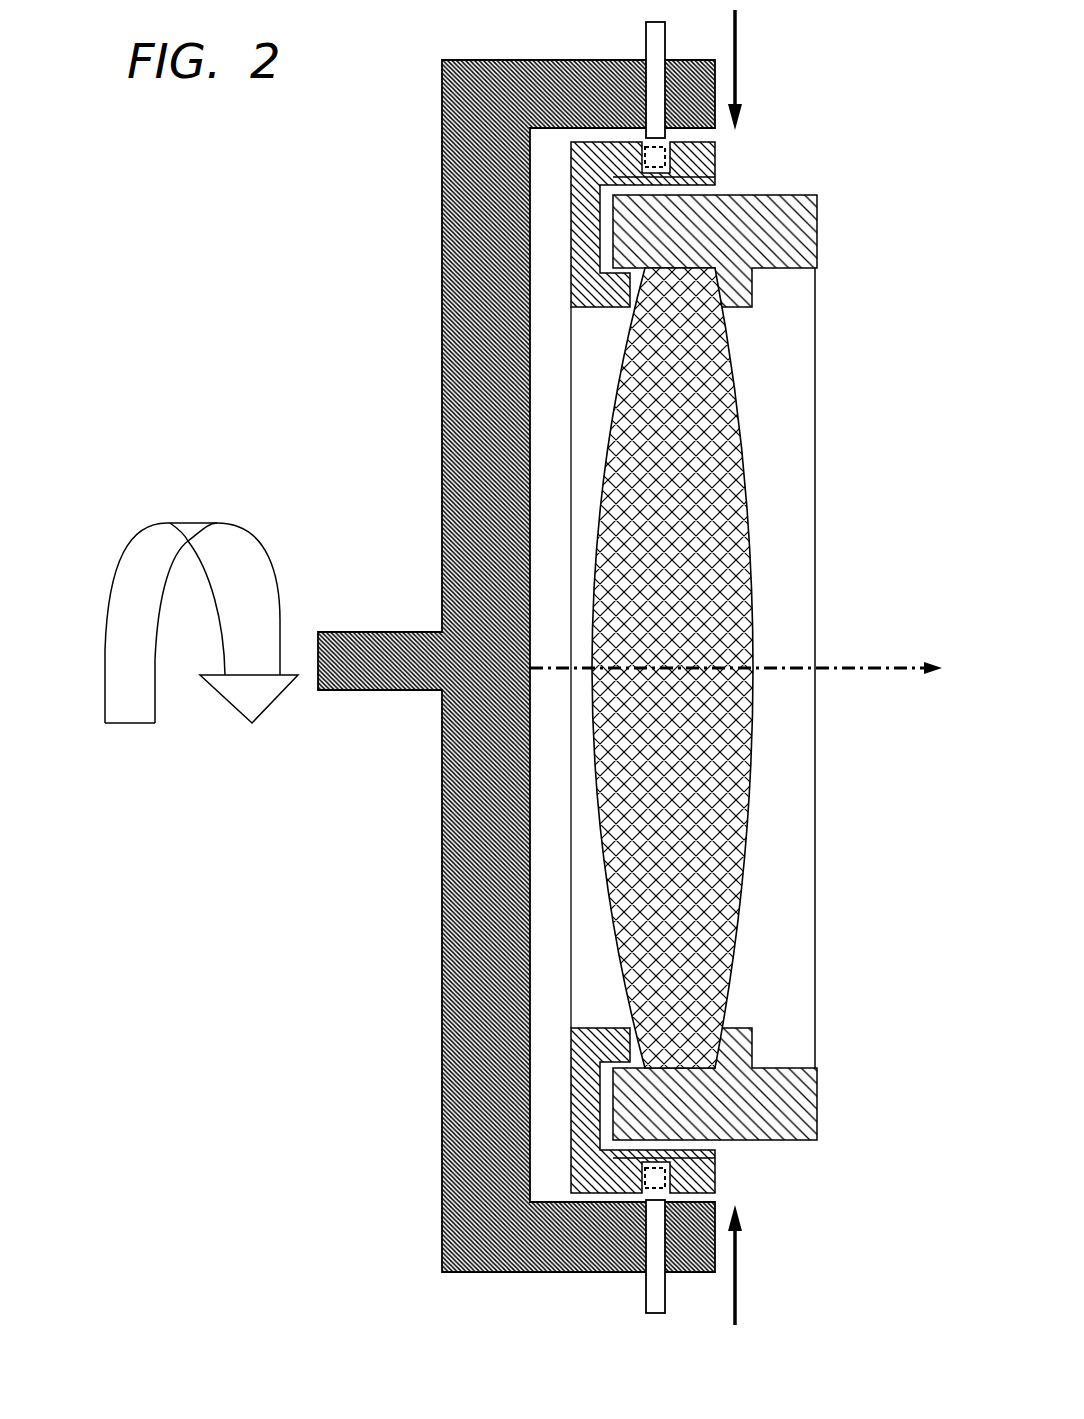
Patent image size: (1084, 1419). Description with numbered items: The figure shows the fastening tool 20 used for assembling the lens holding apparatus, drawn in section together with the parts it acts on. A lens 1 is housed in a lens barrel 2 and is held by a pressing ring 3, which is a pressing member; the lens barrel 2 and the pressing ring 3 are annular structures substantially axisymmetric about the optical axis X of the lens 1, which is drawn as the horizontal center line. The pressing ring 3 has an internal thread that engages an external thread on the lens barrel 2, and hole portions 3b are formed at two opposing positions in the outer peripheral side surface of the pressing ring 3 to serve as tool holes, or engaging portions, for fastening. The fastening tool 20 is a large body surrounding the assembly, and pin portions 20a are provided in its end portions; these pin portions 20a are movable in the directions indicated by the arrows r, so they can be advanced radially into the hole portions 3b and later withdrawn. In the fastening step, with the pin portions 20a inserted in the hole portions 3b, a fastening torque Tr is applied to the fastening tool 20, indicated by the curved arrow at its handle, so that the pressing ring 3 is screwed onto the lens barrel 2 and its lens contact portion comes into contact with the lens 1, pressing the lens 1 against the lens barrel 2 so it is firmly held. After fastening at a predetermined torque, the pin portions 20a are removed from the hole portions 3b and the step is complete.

The lens 1 is at (733, 843).
The lens barrel 2 is at (790, 1100).
The pressing ring 3 is at (582, 1112).
The hole portions 3b is at (670, 163).
The fastening tool 20 is at (443, 473).
The pin portions 20a is at (650, 38).
The arrows indicating pin movement directions r is at (737, 60).
The optical axis X is at (878, 668).
The fastening torque Tr is at (128, 562).